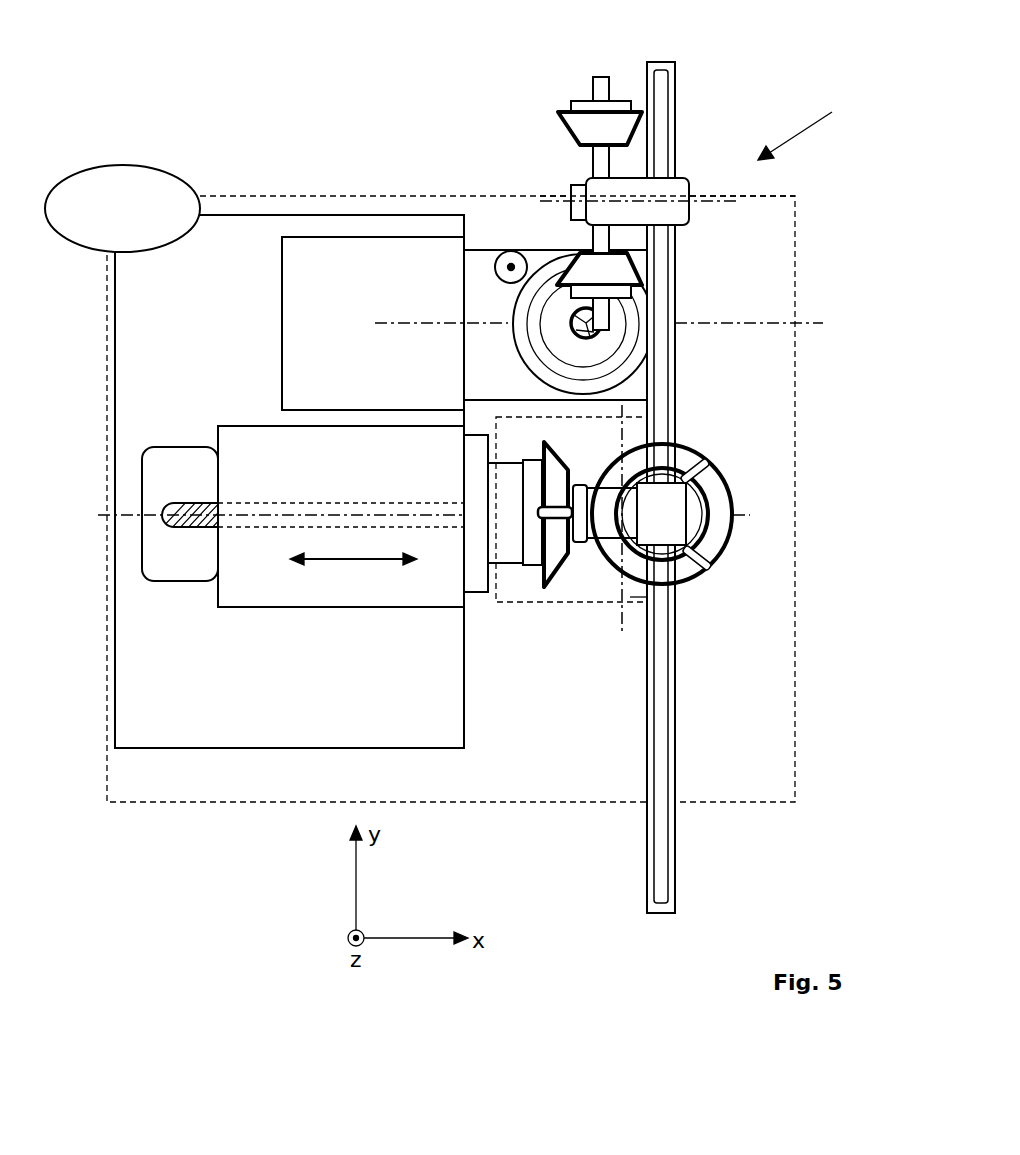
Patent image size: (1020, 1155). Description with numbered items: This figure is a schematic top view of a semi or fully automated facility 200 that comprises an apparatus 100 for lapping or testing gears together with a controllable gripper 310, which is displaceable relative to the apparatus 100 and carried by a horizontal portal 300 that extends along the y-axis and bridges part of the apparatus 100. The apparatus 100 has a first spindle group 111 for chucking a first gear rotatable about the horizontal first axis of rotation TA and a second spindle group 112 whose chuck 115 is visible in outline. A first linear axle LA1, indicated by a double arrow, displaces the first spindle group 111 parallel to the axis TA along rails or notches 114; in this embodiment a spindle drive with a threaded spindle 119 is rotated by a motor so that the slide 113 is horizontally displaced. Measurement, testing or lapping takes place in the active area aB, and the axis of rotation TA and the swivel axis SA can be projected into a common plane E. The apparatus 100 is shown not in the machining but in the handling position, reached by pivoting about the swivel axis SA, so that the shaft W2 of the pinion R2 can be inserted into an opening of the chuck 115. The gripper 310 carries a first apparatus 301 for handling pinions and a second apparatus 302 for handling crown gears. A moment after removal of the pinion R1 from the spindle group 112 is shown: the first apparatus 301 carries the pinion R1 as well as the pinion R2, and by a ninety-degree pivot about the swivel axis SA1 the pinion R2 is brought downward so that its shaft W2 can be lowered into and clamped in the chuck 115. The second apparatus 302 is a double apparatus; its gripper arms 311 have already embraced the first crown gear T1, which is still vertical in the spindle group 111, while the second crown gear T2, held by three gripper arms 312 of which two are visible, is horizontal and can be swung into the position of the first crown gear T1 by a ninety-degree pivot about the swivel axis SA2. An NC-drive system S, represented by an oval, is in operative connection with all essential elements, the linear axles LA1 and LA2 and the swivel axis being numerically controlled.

The apparatus 100 is at (334, 157).
The facility 200 is at (787, 36).
The NC-drive system S is at (117, 221).
The shaft W2 is at (597, 77).
The pinion R2 is at (558, 114).
The portal 300 is at (672, 65).
The controllable gripper 310 is at (817, 127).
The swivel axis SA1 is at (542, 196).
The first apparatus 301 is at (689, 208).
The second linear axle LA2 is at (511, 255).
The pinion R1 is at (623, 283).
The swivel axis SA is at (617, 324).
The second spindle group 112 is at (552, 347).
The chuck 115 is at (620, 337).
The rails or notches 114 is at (640, 355).
The second apparatus 302 is at (613, 510).
The gripper arms 312 is at (710, 462).
The common plane E is at (795, 433).
The second crown gear T2 is at (720, 528).
The first axis of rotation TA is at (408, 512).
The threaded spindle 119 is at (173, 527).
The first linear axle LA1 is at (353, 572).
The slide 113 is at (233, 608).
The first spindle group 111 is at (522, 563).
The first crown gear T1 is at (570, 553).
The gripper arms 311 is at (555, 517).
The active area aB is at (638, 597).
The swivel axis SA2 is at (623, 621).